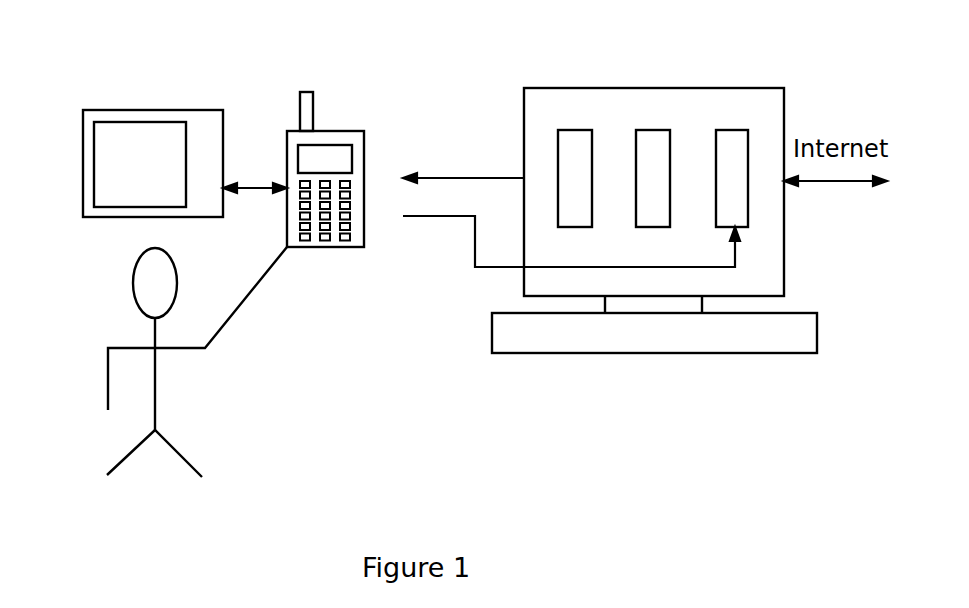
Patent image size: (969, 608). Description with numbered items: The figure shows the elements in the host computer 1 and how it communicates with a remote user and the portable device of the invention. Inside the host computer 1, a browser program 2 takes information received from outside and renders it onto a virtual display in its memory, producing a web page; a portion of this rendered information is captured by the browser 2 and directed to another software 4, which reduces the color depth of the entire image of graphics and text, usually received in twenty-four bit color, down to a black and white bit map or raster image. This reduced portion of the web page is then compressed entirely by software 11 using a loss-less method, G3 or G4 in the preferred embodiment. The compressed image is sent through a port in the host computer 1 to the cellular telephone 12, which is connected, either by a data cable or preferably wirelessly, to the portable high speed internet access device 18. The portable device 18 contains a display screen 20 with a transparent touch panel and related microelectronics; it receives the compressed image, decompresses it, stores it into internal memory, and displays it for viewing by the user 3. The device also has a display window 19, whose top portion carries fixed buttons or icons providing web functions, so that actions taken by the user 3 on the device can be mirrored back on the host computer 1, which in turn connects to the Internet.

The host computer 1 is at (654, 254).
The browser program 2 is at (783, 118).
The user 3 is at (197, 362).
The software 4 is at (699, 120).
The software 11 is at (629, 117).
The cellular telephone 12 is at (367, 135).
The portable high speed internet access device 18 is at (115, 203).
The display window 19 is at (179, 125).
The display screen 20 is at (102, 172).